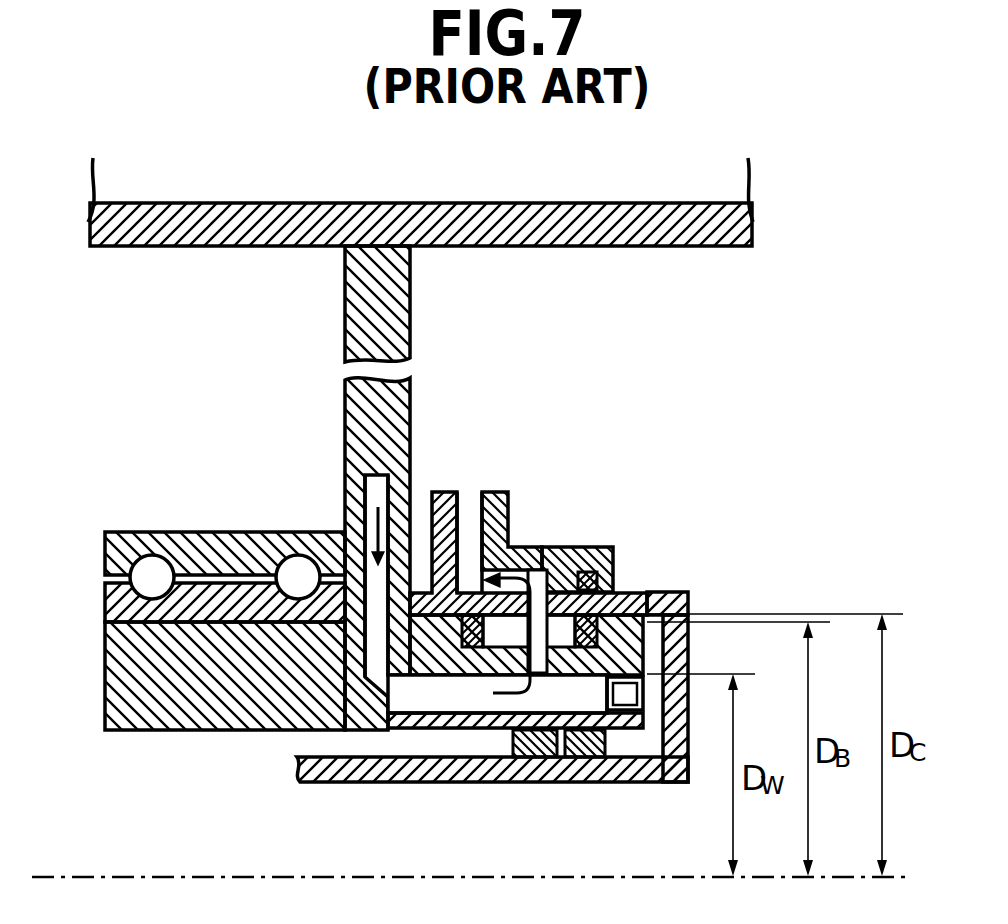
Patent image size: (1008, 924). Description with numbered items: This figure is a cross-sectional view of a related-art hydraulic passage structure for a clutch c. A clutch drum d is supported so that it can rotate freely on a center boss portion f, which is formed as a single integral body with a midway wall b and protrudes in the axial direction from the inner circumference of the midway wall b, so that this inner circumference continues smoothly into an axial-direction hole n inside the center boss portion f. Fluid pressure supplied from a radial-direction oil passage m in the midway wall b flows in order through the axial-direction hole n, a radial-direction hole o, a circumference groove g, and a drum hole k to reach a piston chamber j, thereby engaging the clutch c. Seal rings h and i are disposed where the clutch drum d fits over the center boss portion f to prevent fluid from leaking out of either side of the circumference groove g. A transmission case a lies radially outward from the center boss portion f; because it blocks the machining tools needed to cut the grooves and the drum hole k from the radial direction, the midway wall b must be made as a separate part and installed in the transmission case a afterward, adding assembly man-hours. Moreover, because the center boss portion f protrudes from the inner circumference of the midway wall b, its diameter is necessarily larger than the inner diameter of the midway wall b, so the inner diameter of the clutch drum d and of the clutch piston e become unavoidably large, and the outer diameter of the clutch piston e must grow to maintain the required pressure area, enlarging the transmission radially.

The transmission case a is at (150, 247).
The midway wall b is at (345, 312).
The clutch c is at (508, 482).
The clutch drum d is at (445, 492).
The clutch piston e is at (530, 547).
The center boss portion f is at (650, 592).
The circumference groove g is at (512, 658).
The seal ring h is at (470, 647).
The seal ring i is at (588, 648).
The piston chamber j is at (468, 520).
The drum hole k is at (560, 548).
The radial-direction oil passage m is at (367, 490).
The axial-direction hole n is at (493, 700).
The radial-direction hole o is at (610, 700).